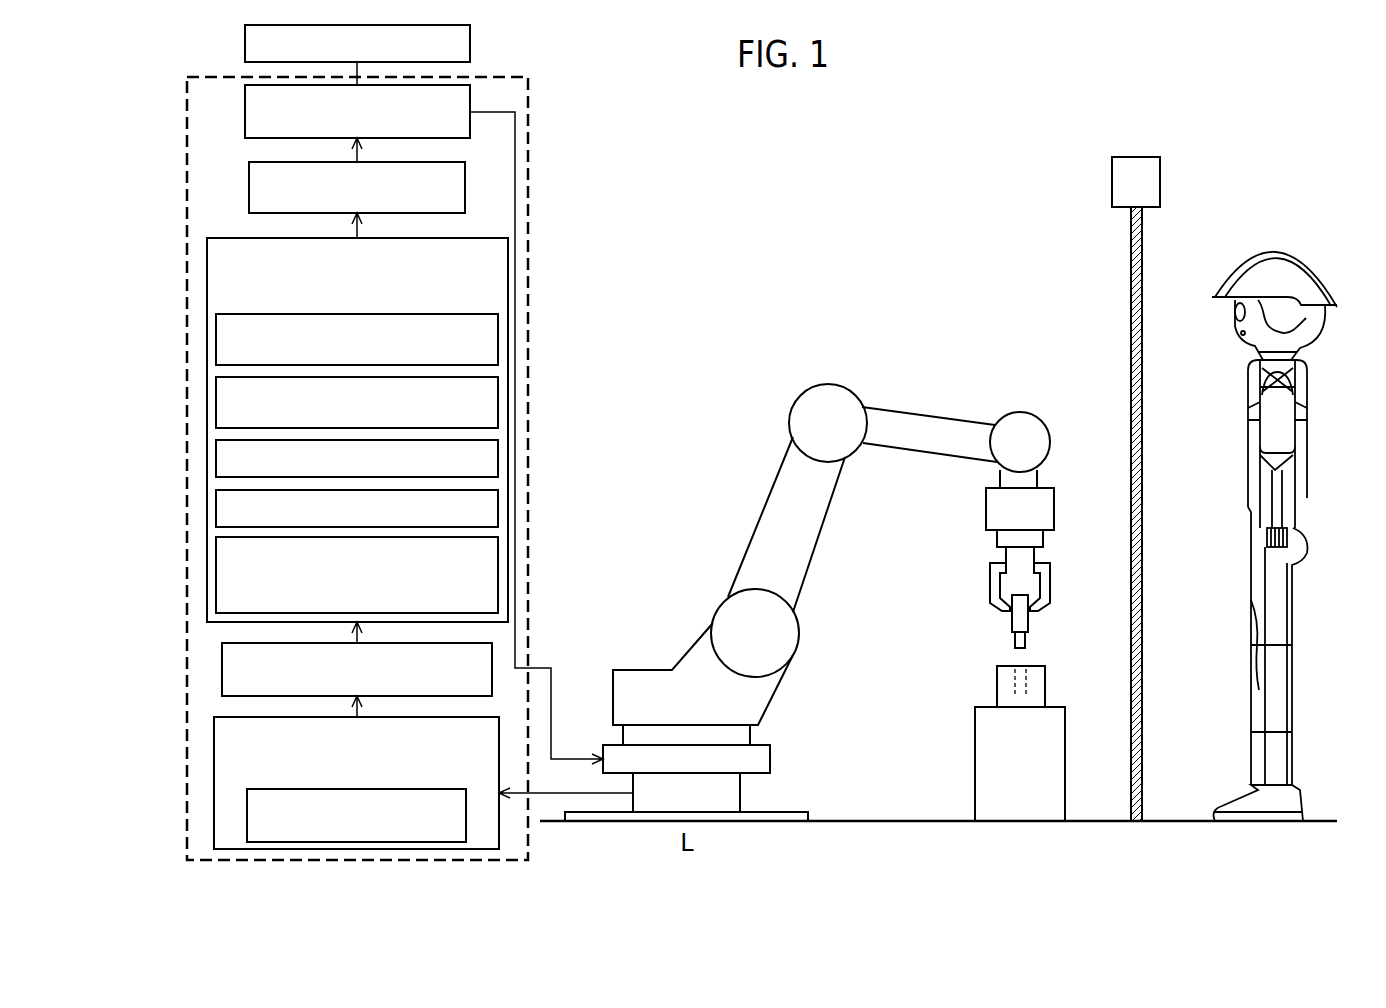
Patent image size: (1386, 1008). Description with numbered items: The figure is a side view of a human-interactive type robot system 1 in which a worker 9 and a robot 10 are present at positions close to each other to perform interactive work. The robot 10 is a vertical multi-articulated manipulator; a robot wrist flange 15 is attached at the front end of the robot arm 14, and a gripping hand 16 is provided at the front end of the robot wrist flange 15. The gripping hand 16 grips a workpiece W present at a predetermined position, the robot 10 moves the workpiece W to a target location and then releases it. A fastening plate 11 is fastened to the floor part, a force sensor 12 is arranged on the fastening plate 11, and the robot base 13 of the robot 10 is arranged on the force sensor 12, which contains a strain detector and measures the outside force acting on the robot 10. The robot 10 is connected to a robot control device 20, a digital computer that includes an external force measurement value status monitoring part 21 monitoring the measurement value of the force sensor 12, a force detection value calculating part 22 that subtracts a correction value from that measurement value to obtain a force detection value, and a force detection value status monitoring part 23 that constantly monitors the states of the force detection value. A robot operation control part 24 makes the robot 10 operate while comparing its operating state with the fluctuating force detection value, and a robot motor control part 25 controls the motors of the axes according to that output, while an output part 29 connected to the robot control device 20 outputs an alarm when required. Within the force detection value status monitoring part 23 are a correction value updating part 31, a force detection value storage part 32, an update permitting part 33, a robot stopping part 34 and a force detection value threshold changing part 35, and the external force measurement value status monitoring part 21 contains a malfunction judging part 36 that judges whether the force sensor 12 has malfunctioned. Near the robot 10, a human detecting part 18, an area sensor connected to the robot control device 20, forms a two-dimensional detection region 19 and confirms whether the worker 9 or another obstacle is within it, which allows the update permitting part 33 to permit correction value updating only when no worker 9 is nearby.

The human-interactive type robot system 1 is at (964, 296).
The worker 9 is at (1295, 255).
The robot 10 is at (776, 381).
The fastening plate 11 is at (808, 815).
The force sensor 12 is at (740, 794).
The robot base 13 is at (770, 759).
The robot arm 14 is at (766, 508).
The robot wrist flange 15 is at (1040, 477).
The gripping hand 16 is at (990, 580).
The workpiece W is at (1012, 623).
The human detecting part 18 is at (1160, 181).
The detection region 19 is at (1142, 247).
The robot control device 20 is at (528, 94).
The external force measurement value status monitoring part 21 is at (214, 752).
The force detection value calculating part 22 is at (222, 668).
The force detection value status monitoring part 23 is at (207, 277).
The robot operation control part 24 is at (249, 188).
The robot motor control part 25 is at (245, 112).
The output part 29 is at (470, 43).
The correction value updating part 31 is at (216, 340).
The force detection value storage part 32 is at (216, 395).
The update permitting part 33 is at (216, 447).
The robot stopping part 34 is at (216, 502).
The force detection value threshold changing part 35 is at (216, 575).
The malfunction judging part 36 is at (247, 825).